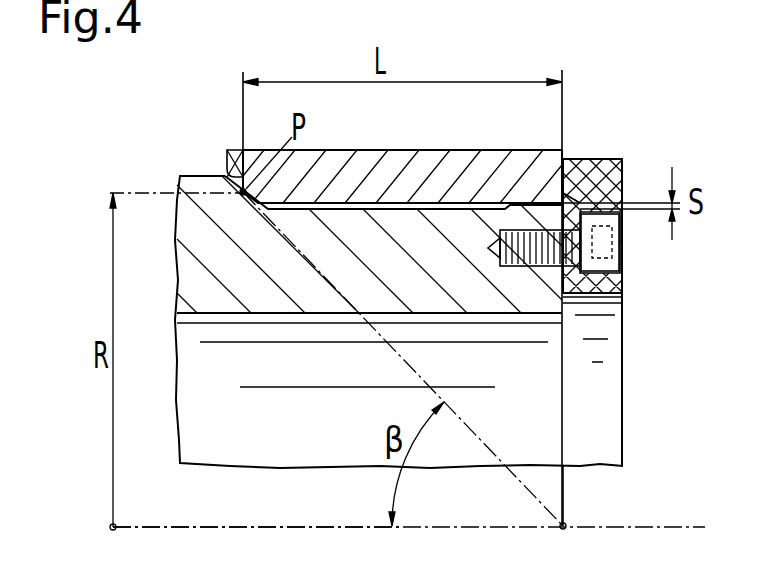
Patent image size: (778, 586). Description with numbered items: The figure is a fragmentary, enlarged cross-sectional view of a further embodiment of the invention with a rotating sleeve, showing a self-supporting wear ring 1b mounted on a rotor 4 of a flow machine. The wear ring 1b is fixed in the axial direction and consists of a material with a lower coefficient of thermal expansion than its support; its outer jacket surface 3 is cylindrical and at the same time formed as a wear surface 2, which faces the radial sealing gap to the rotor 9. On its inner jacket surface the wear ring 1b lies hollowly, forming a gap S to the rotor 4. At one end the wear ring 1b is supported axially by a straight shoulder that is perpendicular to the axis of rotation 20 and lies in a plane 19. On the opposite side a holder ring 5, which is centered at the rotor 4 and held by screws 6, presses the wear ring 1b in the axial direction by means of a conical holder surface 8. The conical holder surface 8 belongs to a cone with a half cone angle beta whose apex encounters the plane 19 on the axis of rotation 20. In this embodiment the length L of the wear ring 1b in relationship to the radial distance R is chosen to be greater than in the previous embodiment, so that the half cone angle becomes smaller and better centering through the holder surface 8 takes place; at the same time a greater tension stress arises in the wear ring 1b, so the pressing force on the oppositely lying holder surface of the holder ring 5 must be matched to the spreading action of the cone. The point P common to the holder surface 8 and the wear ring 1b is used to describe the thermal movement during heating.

The wear ring 1b is at (432, 168).
The wear surface 2 is at (345, 150).
The outer jacket surface 3 is at (522, 150).
The rotor 4 is at (207, 212).
The holder ring 5 is at (590, 172).
The screws 6 is at (590, 257).
The conical holder surface 8 is at (233, 150).
The rotor 9 is at (545, 373).
The plane 19 is at (563, 495).
The axis of rotation 20 is at (155, 527).